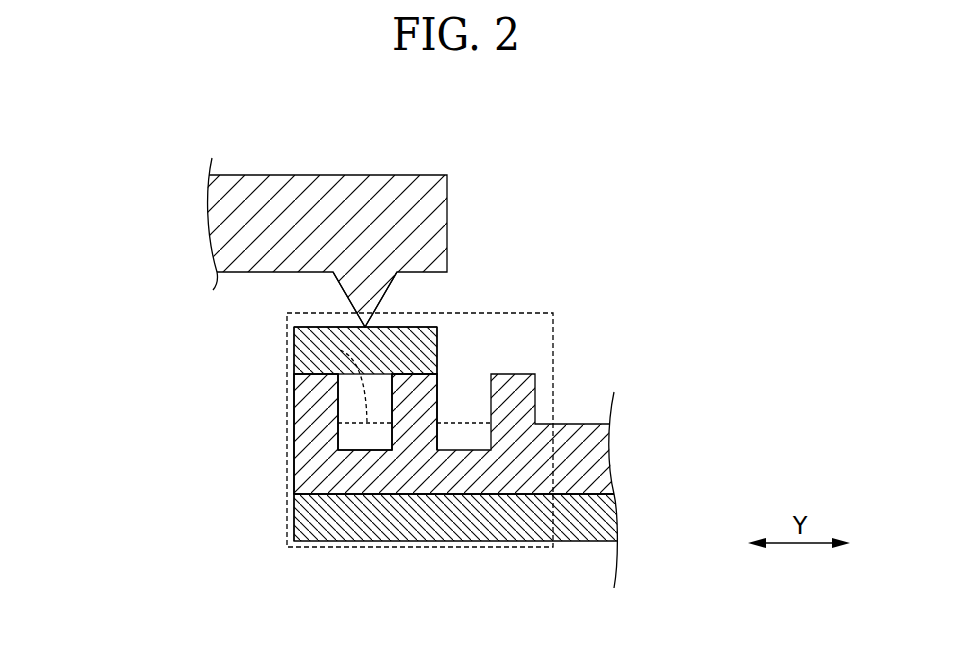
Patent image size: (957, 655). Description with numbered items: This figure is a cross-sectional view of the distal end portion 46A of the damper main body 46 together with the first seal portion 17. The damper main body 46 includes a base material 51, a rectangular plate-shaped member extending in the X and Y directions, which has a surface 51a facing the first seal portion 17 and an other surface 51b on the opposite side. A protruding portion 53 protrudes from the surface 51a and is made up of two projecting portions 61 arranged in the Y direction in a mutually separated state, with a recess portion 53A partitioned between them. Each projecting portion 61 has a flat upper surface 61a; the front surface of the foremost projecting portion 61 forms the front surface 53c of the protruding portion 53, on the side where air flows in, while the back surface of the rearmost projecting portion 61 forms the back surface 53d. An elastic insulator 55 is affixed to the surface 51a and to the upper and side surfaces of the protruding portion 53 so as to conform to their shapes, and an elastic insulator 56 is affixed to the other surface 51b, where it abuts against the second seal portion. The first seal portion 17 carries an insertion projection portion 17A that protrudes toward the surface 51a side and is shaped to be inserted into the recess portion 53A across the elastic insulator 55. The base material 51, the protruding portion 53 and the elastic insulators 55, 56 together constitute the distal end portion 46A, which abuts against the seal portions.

The first seal portion 17 is at (311, 164).
The insertion projection portion 17A is at (366, 293).
The protruding portion 53 is at (182, 408).
The projecting portion 61 is at (307, 408).
The front surface of the protruding portion 53c is at (294, 395).
The back surface of the protruding portion 53d is at (438, 392).
The upper surface 61a is at (413, 373).
The recess portion 53A is at (380, 388).
The elastic insulator 55 is at (307, 360).
The surface 51a is at (340, 350).
The elastic insulator 56 is at (598, 515).
The other surface 51b is at (432, 494).
The base material 51 is at (393, 475).
The damper main body 46 is at (630, 433).
The distal end portion 46A is at (553, 547).